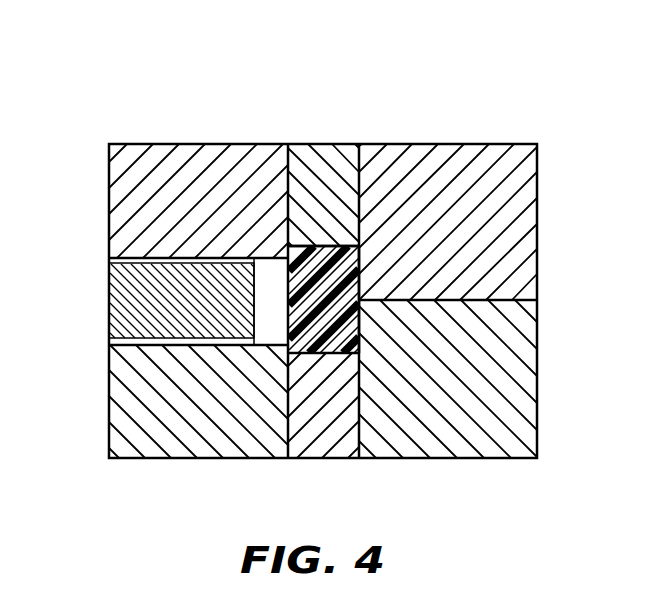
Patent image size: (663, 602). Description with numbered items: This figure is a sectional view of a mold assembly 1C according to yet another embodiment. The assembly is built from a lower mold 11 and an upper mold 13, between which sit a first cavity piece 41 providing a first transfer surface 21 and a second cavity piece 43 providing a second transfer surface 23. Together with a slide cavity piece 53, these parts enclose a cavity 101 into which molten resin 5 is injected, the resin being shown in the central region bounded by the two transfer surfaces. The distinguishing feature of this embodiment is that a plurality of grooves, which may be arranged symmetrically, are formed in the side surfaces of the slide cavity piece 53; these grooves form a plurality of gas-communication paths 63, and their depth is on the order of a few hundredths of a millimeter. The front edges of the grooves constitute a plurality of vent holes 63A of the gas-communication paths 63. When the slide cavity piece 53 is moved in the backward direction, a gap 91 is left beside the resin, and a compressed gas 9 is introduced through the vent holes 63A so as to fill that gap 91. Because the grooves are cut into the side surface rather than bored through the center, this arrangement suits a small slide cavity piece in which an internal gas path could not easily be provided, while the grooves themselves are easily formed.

The mold assembly 1C is at (141, 82).
The second cavity piece 43 is at (325, 157).
The upper mold 13 is at (527, 212).
The lower mold 11 is at (527, 360).
The compressed gas 9 is at (100, 263).
The gas-communication paths 63 is at (103, 268).
The slide cavity piece 53 is at (166, 330).
The vent holes 63A is at (258, 260).
The gap 91 is at (278, 282).
The cavity 101 is at (318, 245).
The molten resin 5 is at (342, 351).
The second transfer surface 23 is at (352, 249).
The first transfer surface 21 is at (330, 355).
The first cavity piece 41 is at (325, 435).